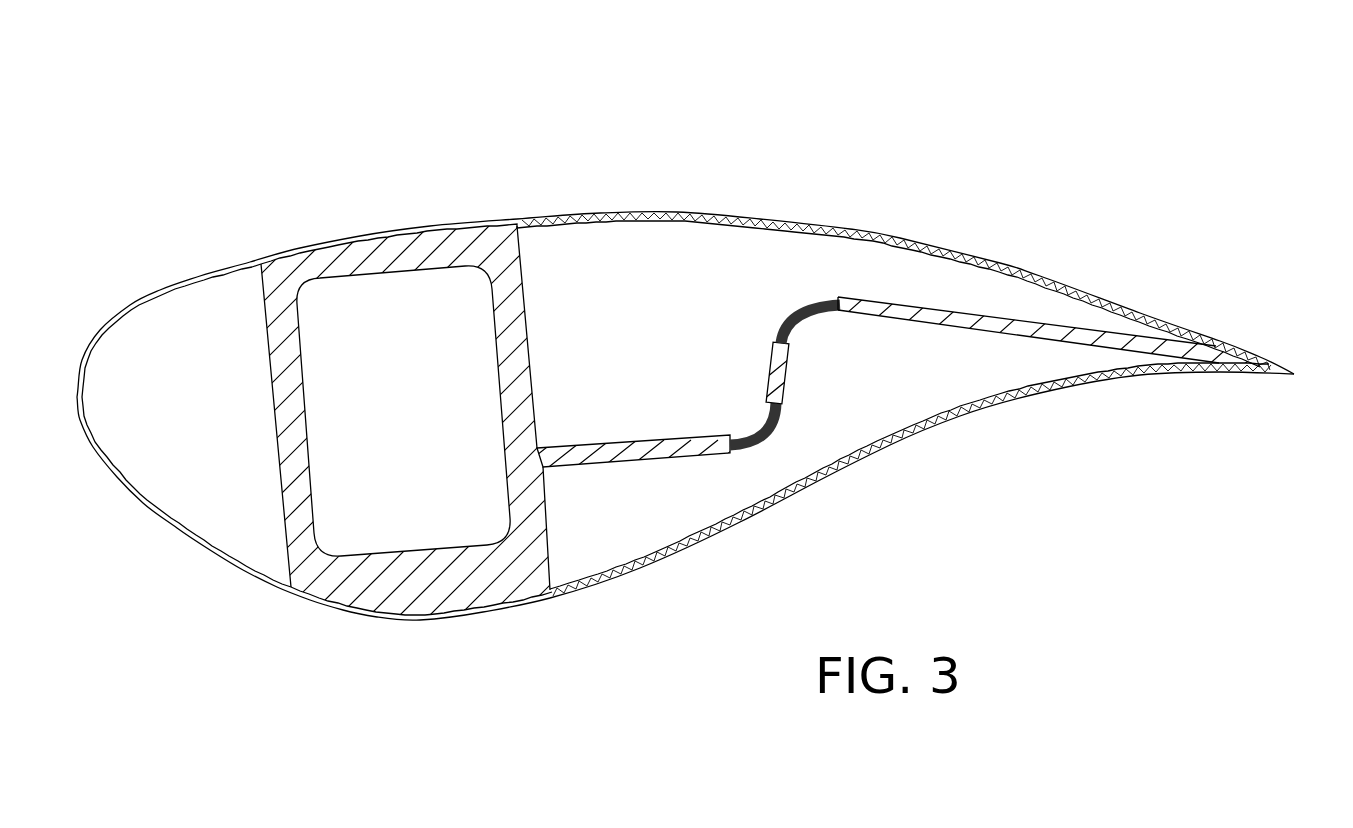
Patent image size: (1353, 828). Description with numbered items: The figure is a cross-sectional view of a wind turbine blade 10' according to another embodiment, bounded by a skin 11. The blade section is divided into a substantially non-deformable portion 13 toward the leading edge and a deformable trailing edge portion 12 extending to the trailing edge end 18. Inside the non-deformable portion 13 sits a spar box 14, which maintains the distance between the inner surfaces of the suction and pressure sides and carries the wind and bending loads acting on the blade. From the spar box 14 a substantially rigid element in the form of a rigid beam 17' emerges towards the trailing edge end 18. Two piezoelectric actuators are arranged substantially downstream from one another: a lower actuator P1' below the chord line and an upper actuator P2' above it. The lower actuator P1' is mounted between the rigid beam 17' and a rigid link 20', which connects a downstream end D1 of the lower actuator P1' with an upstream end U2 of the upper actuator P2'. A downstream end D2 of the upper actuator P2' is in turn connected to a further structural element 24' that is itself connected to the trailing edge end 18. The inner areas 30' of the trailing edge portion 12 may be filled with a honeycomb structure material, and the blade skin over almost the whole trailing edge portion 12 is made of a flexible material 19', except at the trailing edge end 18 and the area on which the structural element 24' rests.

The wind turbine blade 10' is at (182, 199).
The skin 11 is at (98, 350).
The deformable trailing edge portion 12 is at (520, 127).
The substantially non-deformable portion 13 is at (80, 155).
The spar box 14 is at (413, 605).
The rigid beam 17' is at (631, 550).
The trailing edge end 18 is at (1294, 371).
The flexible material 19' is at (893, 277).
The rigid link 20' is at (902, 457).
The further structural element 24' is at (932, 476).
The inner areas 30' is at (648, 222).
The upstream end of actuator P2' U2 is at (777, 317).
The lower piezoelectric actuator P1' is at (771, 490).
The upper piezoelectric actuator P2' is at (825, 221).
The downstream end of actuator P1' D1 is at (788, 418).
The downstream end of actuator P2' D2 is at (830, 318).